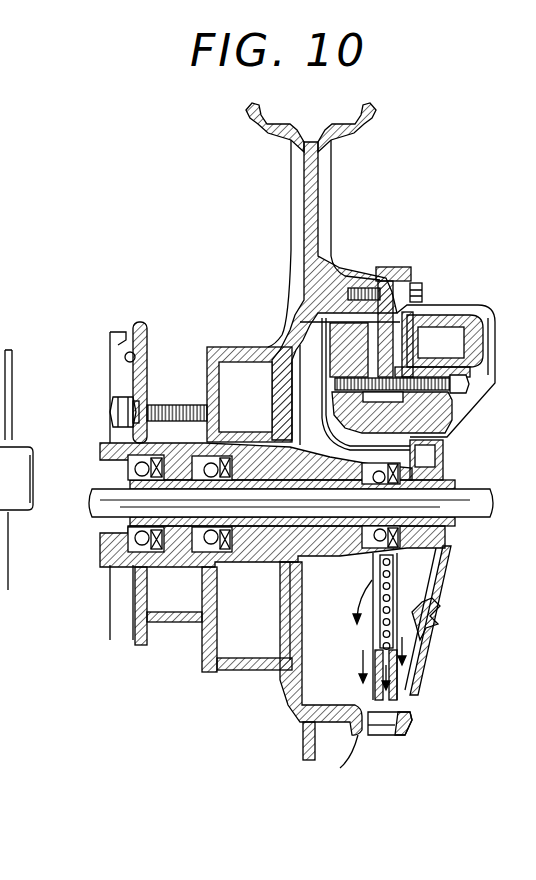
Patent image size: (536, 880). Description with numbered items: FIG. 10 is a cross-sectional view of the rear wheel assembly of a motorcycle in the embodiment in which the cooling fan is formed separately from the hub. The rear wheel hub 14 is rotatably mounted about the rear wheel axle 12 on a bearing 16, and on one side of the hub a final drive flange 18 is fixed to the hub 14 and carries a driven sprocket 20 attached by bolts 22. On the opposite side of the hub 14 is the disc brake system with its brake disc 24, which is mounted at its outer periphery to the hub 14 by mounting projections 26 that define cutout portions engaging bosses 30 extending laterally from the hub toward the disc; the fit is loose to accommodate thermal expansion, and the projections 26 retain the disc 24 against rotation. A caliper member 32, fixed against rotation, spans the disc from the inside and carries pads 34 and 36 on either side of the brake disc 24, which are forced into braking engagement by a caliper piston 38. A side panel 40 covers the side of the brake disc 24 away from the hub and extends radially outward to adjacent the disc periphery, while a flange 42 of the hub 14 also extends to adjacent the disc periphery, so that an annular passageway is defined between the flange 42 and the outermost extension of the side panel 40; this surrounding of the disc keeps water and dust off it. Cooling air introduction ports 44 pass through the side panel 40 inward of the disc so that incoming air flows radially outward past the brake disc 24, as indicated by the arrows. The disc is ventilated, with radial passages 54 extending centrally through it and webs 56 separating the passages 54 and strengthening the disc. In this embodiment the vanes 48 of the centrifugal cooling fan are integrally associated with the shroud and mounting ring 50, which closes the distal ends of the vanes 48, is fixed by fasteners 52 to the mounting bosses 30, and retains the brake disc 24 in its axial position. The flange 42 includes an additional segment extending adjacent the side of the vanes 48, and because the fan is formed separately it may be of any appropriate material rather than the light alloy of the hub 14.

The rear wheel axle 12 is at (470, 492).
The rear wheel hub 14 is at (329, 211).
The bearing 16 is at (365, 478).
The final drive flange 18 is at (206, 350).
The driven sprocket 20 is at (140, 338).
The bolts 22 is at (126, 403).
The brake disc 24 is at (370, 578).
The mounting projections 26 is at (337, 316).
The bosses 30 is at (381, 284).
The caliper member 32 is at (470, 404).
The pad 34 is at (345, 357).
The pad 36 is at (408, 325).
The caliper piston 38 is at (483, 328).
The side panel 40 is at (428, 645).
The flange 42 is at (343, 762).
The cooling air introduction ports 44 is at (440, 619).
The vanes 48 is at (382, 735).
The shroud or ring 50 is at (395, 267).
The fasteners 52 is at (416, 286).
The radial passages 54 is at (373, 558).
The webs 56 is at (380, 633).